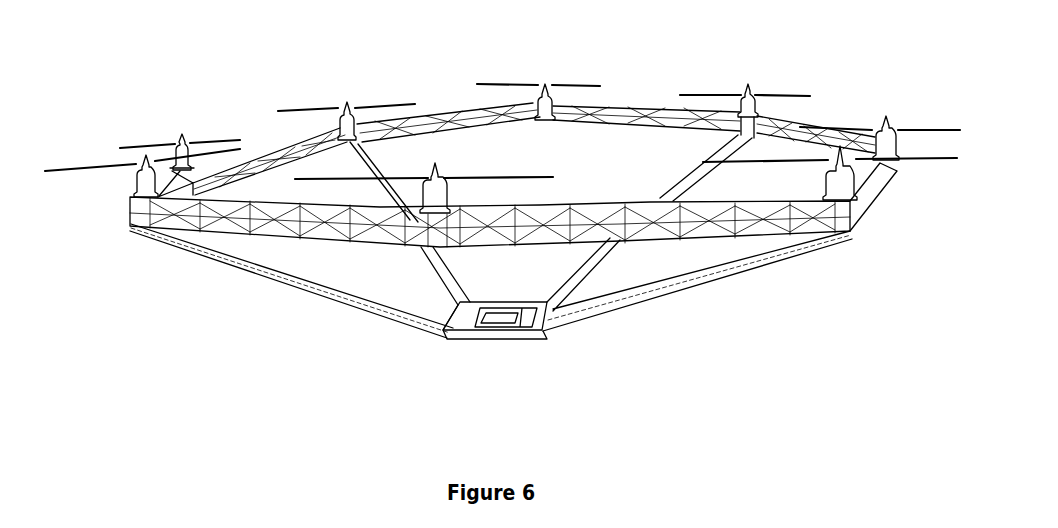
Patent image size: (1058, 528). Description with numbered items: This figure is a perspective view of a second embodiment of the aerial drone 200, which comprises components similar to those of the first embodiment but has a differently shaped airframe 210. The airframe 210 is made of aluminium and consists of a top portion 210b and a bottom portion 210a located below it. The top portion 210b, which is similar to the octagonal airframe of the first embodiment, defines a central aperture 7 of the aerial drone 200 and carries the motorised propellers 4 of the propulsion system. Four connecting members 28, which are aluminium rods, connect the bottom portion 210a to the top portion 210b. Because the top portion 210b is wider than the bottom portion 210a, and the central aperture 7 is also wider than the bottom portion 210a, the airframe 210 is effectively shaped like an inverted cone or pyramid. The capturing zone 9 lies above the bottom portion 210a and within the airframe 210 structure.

The aerial drone 200 is at (430, 106).
The airframe 210 is at (267, 152).
The motorised propeller 4 is at (533, 84).
The central aperture 7 is at (582, 140).
The capturing zone 9 is at (523, 280).
The connecting member 28 is at (320, 290).
The bottom portion 210a is at (460, 350).
The top portion 210b is at (717, 238).